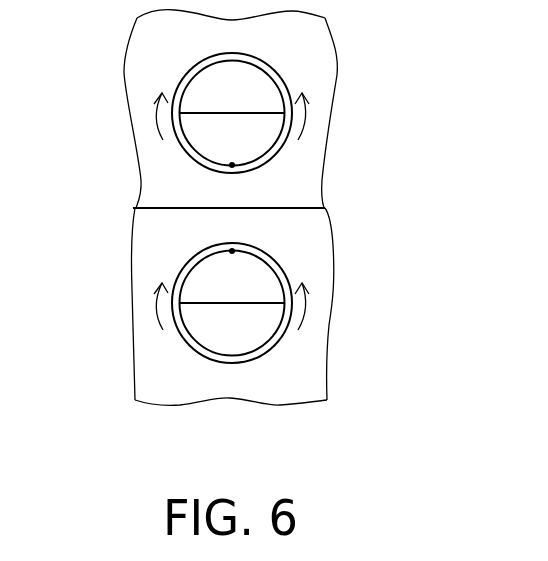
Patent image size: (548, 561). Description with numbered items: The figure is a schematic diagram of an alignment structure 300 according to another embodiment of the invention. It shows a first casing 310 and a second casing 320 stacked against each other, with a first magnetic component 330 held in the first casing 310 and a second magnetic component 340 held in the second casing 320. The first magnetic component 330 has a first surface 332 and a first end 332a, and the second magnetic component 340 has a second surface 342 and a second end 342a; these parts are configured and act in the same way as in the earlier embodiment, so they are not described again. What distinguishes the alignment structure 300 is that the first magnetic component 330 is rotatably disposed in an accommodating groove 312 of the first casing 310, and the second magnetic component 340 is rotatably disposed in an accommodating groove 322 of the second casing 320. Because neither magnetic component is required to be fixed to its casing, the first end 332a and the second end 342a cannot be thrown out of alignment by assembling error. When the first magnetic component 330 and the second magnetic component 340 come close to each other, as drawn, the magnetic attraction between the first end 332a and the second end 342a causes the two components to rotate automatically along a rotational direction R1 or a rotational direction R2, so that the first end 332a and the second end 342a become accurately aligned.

The alignment structure 300 is at (251, 243).
The first casing 310 is at (313, 373).
The accommodating groove 312 is at (193, 353).
The second casing 320 is at (320, 43).
The accommodating groove 322 is at (196, 62).
The first magnetic component 330 is at (200, 328).
The first surface 332 is at (183, 277).
The first end 332a is at (232, 251).
The second magnetic component 340 is at (198, 87).
The second surface 342 is at (185, 142).
The second end 342a is at (232, 165).
The rotational direction R1 is at (155, 118).
The rotational direction R2 is at (303, 122).